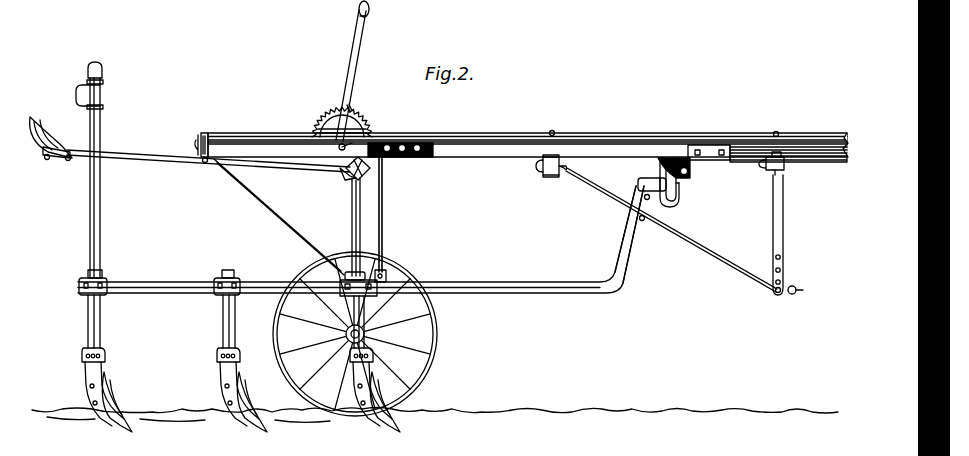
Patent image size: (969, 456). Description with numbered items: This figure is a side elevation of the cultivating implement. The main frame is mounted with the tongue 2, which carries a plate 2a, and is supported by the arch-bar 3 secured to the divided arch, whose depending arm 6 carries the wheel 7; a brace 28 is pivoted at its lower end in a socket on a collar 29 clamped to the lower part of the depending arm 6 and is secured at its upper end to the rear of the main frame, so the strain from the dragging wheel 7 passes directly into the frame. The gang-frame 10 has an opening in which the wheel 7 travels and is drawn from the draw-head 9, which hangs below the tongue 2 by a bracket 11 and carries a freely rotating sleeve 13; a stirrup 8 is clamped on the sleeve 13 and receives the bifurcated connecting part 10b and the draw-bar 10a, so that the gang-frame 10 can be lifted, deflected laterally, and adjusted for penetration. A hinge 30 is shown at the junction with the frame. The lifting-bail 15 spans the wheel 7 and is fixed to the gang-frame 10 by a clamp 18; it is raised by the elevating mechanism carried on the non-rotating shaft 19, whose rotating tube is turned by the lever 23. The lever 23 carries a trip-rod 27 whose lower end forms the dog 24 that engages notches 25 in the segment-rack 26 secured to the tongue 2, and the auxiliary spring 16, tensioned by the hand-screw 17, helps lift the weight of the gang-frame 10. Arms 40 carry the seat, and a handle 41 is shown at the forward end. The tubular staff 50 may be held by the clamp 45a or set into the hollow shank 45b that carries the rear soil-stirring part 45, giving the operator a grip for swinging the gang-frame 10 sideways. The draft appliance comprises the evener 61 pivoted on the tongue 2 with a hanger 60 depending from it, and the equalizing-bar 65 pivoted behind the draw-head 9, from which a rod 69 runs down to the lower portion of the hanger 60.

The tongue 2 is at (795, 152).
The plate 2a is at (723, 145).
The arch-bar 3 is at (351, 177).
The depending arm 6 is at (352, 233).
The wheel 7 is at (437, 350).
The stirrup 8 is at (670, 207).
The draw-head 9 is at (686, 174).
The gang-frame 10 is at (522, 286).
The draw-bar 10a is at (636, 264).
The bifurcated connecting part 10b is at (644, 184).
The bracket 11 is at (692, 168).
The sleeve 13 is at (680, 181).
The lifting-bail 15 is at (385, 258).
The auxiliary spring 16 is at (302, 130).
The hand-screw 17 is at (201, 133).
The clamp 18 is at (392, 282).
The non-rotating shaft 19 is at (378, 138).
The lever 23 is at (360, 67).
The dog 24 is at (353, 117).
The notches 25 is at (323, 127).
The segment-rack 26 is at (333, 113).
The trip-rod 27 is at (357, 12).
The brace 28 is at (281, 209).
The collar 29 is at (340, 283).
The hinge 30 is at (370, 168).
The arm 40 is at (128, 154).
The handle 41 is at (45, 128).
The rear soil-stirring part 45 is at (130, 423).
The clamp 45a is at (103, 284).
The hollow shank 45b is at (101, 325).
The staff 50 is at (101, 235).
The hanger 60 is at (784, 246).
The evener 61 is at (786, 166).
The equalizing-bar 65 is at (568, 167).
The rod 69 is at (733, 265).